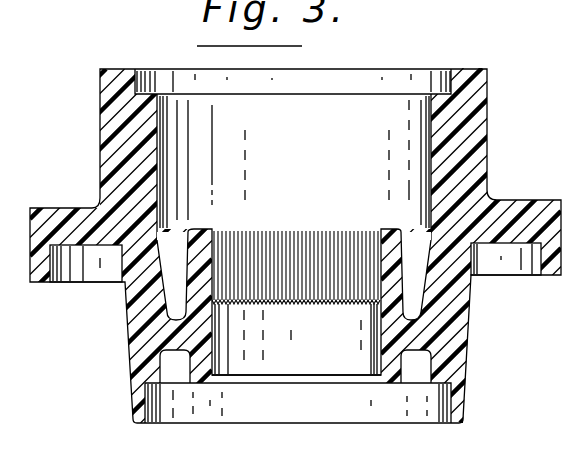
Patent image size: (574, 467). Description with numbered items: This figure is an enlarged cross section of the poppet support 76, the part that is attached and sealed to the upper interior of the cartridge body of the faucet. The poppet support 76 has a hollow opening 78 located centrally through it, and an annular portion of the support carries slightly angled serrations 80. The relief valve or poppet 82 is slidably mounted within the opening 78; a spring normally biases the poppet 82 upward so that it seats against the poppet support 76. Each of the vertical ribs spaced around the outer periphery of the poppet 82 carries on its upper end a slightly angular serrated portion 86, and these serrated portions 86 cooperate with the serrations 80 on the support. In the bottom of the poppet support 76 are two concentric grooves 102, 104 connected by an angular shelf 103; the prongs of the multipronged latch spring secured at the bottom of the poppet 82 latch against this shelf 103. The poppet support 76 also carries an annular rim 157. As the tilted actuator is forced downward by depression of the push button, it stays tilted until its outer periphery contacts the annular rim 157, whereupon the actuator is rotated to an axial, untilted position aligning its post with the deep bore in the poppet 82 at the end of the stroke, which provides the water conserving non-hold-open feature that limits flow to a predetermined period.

The poppet support 76 is at (489, 112).
The hollow opening 78 is at (291, 362).
The serrations 80 is at (285, 233).
The poppet 82 is at (371, 458).
The serrated portion 86 is at (331, 466).
The concentric groove 102 is at (167, 415).
The angular shelf 103 is at (440, 398).
The concentric groove 104 is at (165, 360).
The annular rim 157 is at (392, 228).